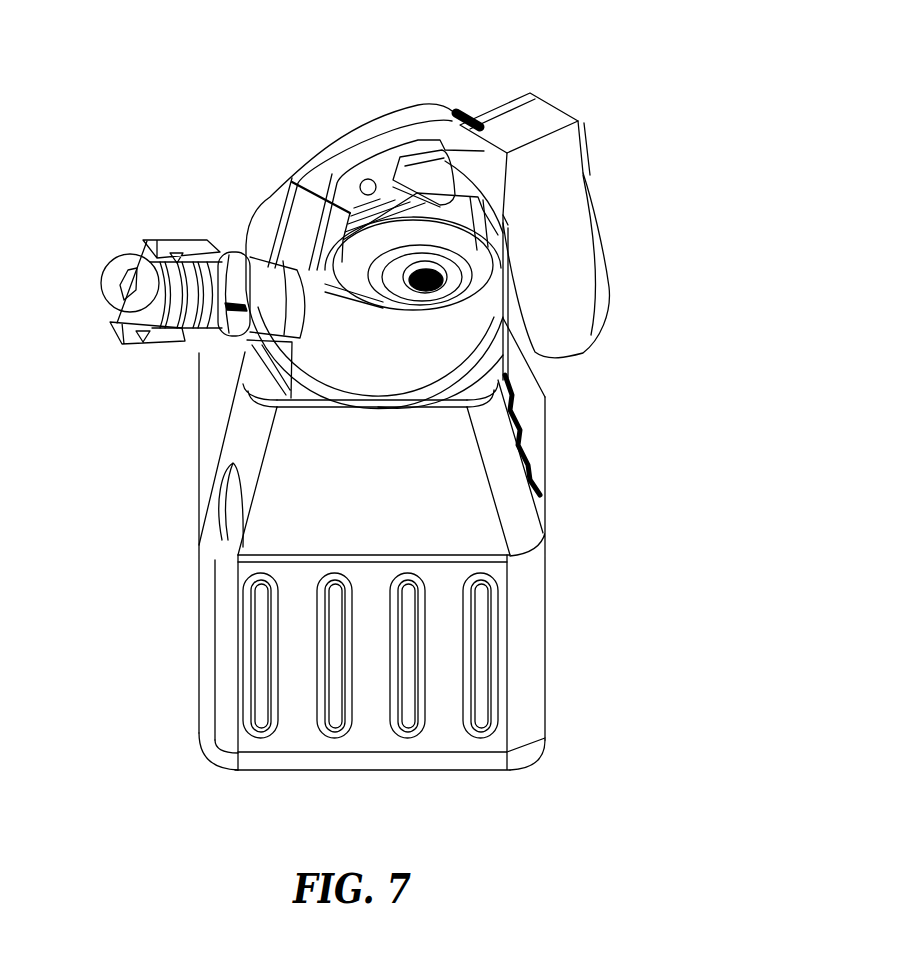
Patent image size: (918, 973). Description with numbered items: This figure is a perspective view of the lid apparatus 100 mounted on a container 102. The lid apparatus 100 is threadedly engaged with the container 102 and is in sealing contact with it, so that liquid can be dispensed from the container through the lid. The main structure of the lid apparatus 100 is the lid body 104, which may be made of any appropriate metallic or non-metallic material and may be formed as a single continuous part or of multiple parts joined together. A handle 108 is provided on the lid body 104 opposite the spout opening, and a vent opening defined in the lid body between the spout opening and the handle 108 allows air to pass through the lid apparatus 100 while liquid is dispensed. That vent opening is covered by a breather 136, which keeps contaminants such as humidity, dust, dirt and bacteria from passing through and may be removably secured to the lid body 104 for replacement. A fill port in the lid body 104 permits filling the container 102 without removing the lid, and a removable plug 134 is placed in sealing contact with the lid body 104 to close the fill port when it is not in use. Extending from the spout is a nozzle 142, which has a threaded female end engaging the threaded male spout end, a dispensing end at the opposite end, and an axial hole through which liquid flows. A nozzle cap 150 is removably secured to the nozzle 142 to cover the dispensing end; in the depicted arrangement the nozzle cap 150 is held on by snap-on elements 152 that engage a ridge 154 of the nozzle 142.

The lid apparatus 100 is at (662, 144).
The container 102 is at (528, 598).
The lid body 104 is at (264, 212).
The handle 108 is at (576, 254).
The removable plug 134 is at (433, 273).
The breather 136 is at (461, 116).
The nozzle 142 is at (198, 362).
The nozzle cap 150 is at (117, 267).
The snap-on elements 152 is at (197, 237).
The ridge 154 is at (195, 337).